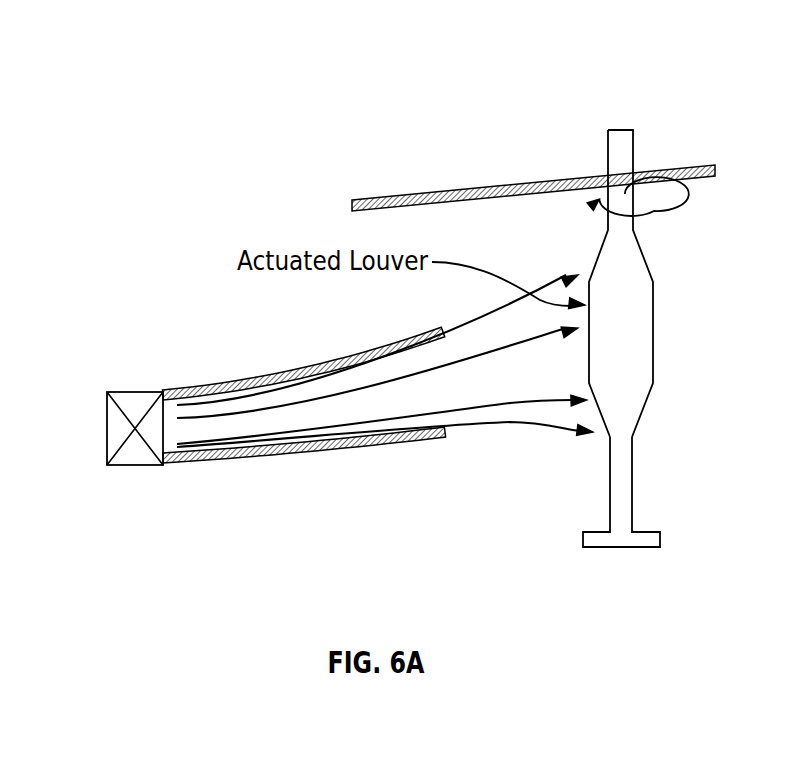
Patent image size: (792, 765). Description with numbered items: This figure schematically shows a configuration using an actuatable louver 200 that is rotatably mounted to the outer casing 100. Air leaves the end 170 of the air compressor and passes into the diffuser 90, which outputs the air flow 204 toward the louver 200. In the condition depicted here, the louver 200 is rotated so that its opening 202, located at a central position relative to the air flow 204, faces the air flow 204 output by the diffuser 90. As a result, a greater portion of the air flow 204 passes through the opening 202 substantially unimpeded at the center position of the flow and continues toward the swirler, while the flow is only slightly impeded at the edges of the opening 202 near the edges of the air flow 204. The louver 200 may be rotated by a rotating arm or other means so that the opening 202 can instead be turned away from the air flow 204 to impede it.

The outer casing 100 is at (495, 187).
The opening 202 is at (622, 363).
The louver 200 is at (625, 547).
The end of air compressor 170 is at (133, 466).
The diffuser 90 is at (292, 462).
The air flow 204 is at (515, 403).